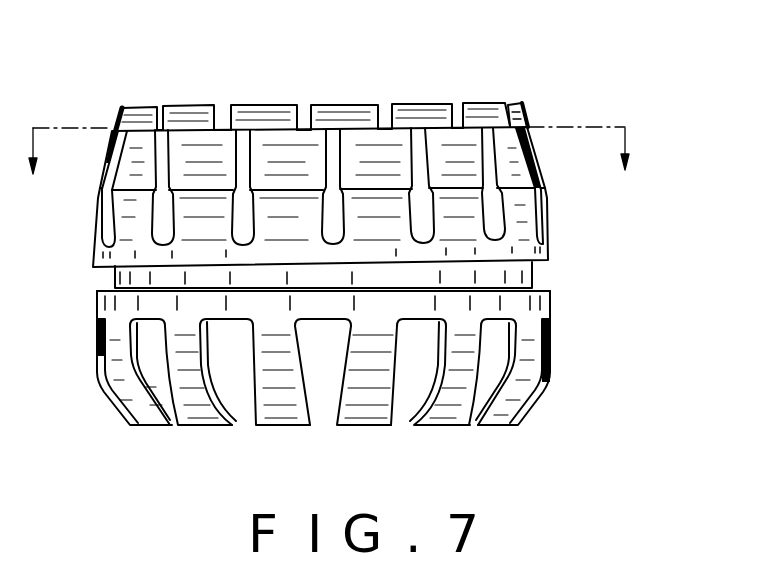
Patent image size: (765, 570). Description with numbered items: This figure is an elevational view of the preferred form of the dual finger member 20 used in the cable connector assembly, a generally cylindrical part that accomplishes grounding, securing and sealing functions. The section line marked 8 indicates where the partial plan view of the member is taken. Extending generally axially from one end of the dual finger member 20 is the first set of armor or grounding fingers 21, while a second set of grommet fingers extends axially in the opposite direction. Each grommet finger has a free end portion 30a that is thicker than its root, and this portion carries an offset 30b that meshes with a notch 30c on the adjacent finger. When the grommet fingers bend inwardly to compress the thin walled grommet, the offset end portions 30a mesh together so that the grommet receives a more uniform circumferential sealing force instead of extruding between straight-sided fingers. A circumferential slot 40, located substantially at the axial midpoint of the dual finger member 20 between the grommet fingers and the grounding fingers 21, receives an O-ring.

The section line 8- 8 is at (332, 166).
The dual finger member 20 is at (105, 303).
The grounding fingers 21 is at (148, 428).
The free end portion 30a is at (140, 107).
The offset 30b is at (478, 103).
The notch 30c is at (160, 128).
The slot 40 is at (540, 283).